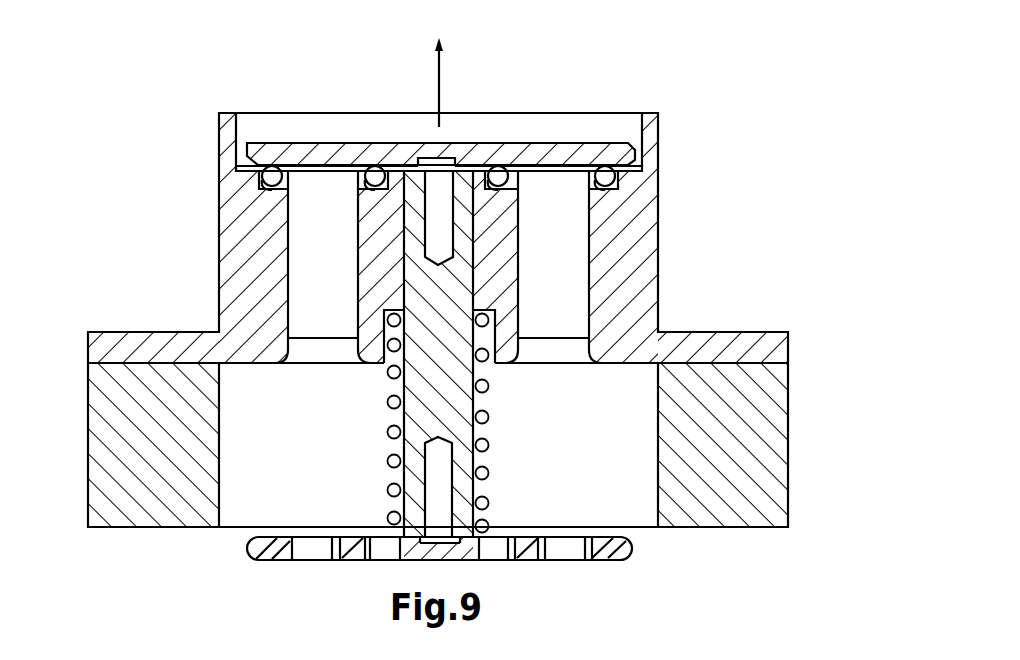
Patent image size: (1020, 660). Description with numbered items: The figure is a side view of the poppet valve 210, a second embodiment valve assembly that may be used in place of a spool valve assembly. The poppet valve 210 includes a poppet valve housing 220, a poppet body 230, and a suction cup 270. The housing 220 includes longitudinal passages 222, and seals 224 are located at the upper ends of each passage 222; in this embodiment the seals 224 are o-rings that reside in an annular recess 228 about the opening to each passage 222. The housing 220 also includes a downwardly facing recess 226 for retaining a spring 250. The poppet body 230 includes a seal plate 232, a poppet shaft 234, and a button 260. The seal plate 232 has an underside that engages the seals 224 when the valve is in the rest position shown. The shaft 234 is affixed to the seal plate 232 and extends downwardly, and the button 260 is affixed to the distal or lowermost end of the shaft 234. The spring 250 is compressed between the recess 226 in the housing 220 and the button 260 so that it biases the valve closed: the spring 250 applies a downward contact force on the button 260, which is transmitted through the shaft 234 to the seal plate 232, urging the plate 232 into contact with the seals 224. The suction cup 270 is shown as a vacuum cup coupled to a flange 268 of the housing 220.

The poppet valve 210 is at (118, 141).
The poppet valve housing 220 is at (625, 242).
The longitudinal passages 222 is at (316, 273).
The seals 224 is at (614, 172).
The downwardly facing recess 226 is at (388, 367).
The annular recess 228 is at (636, 189).
The poppet body 230 is at (442, 312).
The seal plate 232 is at (517, 153).
The poppet shaft 234 is at (442, 312).
The spring 250 is at (486, 526).
The button 260 is at (348, 560).
The flange 268 is at (758, 352).
The suction cup 270 is at (742, 475).